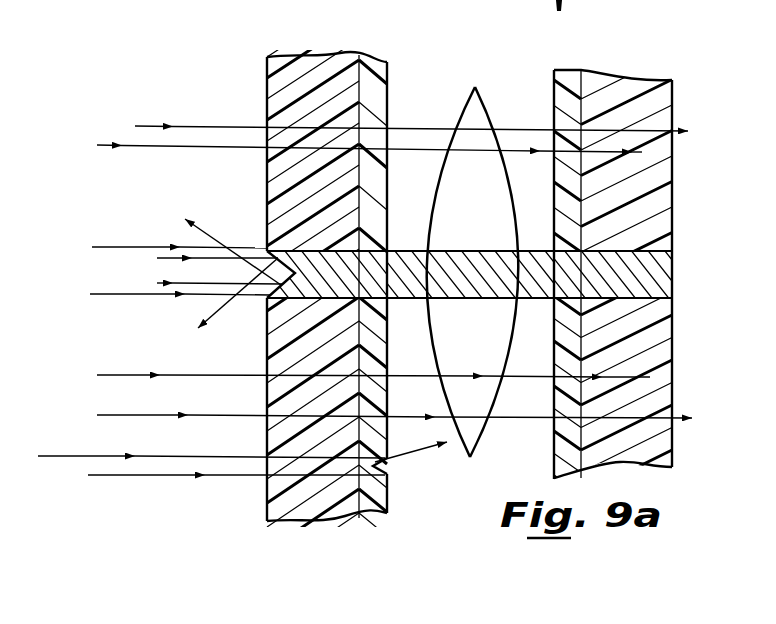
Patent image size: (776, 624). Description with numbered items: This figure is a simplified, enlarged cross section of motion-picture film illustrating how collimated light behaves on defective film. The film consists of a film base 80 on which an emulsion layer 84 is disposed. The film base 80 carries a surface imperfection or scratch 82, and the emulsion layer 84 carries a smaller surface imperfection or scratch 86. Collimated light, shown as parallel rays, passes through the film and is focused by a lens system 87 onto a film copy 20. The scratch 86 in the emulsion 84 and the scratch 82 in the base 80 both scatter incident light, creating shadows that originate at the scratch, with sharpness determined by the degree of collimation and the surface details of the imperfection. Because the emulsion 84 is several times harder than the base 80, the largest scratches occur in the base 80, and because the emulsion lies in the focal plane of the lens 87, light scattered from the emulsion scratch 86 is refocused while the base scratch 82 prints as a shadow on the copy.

The film base 80 is at (275, 78).
The emulsion layer 84 is at (380, 65).
The scratch 86 is at (383, 467).
The scratch 82 is at (262, 250).
The lens system 87 is at (487, 108).
The detector 20 is at (677, 152).